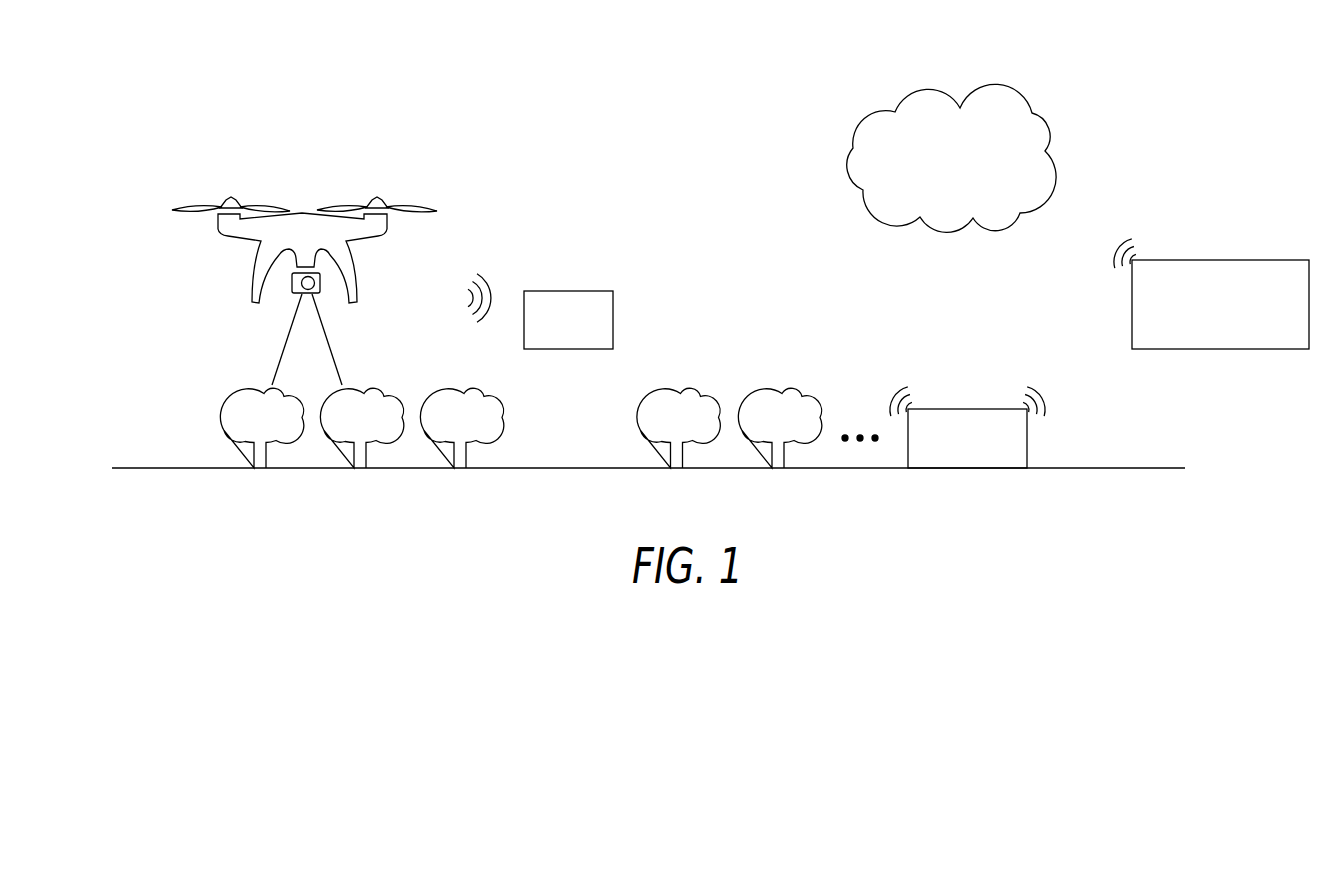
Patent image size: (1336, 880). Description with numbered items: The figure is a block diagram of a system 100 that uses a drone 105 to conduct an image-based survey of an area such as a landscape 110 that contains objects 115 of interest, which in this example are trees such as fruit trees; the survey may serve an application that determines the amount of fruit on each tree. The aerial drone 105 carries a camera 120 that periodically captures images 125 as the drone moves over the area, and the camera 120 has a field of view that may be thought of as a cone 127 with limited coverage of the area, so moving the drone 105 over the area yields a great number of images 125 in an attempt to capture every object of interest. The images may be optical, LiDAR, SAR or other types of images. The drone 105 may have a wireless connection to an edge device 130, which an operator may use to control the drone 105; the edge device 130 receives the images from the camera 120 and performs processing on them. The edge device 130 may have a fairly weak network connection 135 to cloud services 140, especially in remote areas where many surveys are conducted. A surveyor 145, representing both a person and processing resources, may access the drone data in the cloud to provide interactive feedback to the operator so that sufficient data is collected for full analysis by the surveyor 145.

The system 100 is at (481, 73).
The drone 105 is at (204, 205).
The landscape 110 is at (150, 467).
The objects 115 is at (235, 390).
The camera 120 is at (296, 314).
The images 125 is at (571, 291).
The cone 127 is at (334, 357).
The edge device 130 is at (1028, 440).
The network connection 135 is at (1042, 395).
The cloud services 140 is at (1030, 113).
The surveyor 145 is at (1250, 260).